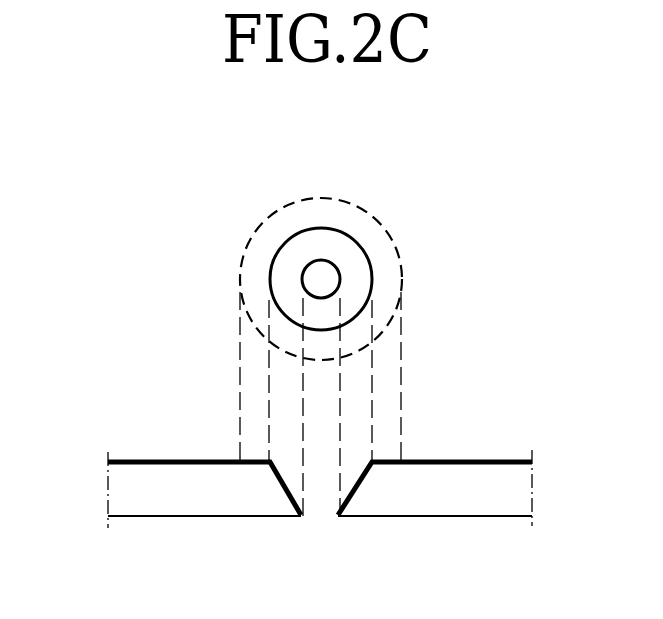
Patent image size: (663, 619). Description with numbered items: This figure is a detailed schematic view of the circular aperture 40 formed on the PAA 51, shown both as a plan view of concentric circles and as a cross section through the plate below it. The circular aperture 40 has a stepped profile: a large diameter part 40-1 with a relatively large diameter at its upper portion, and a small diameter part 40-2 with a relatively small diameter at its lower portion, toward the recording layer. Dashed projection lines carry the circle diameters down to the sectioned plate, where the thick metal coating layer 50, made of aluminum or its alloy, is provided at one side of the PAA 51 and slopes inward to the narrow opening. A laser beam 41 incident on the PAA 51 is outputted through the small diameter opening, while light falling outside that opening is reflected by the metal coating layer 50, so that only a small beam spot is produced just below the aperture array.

The circular aperture 40 is at (328, 480).
The large diameter part 40-1 is at (363, 248).
The small diameter part 40-2 is at (323, 258).
The laser beam 41 is at (402, 285).
The metal coating layer 50 is at (167, 455).
The PAA 51 is at (130, 490).